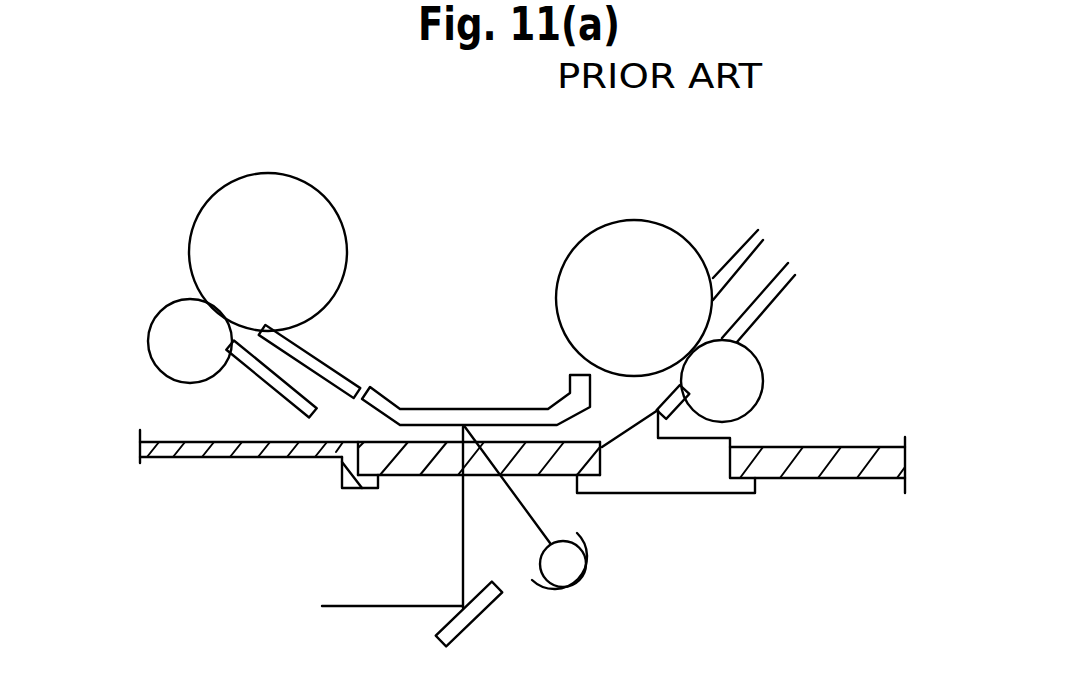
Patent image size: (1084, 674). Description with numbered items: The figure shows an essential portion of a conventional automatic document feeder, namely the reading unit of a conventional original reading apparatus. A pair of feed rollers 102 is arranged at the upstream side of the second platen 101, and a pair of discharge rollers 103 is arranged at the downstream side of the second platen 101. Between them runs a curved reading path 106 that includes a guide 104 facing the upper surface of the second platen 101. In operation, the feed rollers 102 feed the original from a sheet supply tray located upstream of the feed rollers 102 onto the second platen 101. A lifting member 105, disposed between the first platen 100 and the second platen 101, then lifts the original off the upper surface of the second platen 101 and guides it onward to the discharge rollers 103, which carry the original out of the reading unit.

The first platen 100 is at (823, 455).
The second platen 101 is at (533, 457).
The feed rollers 102 is at (273, 200).
The discharge rollers 103 is at (643, 240).
The guide 104 is at (452, 417).
The lifting member 105 is at (685, 480).
The curved reading path 106 is at (428, 432).